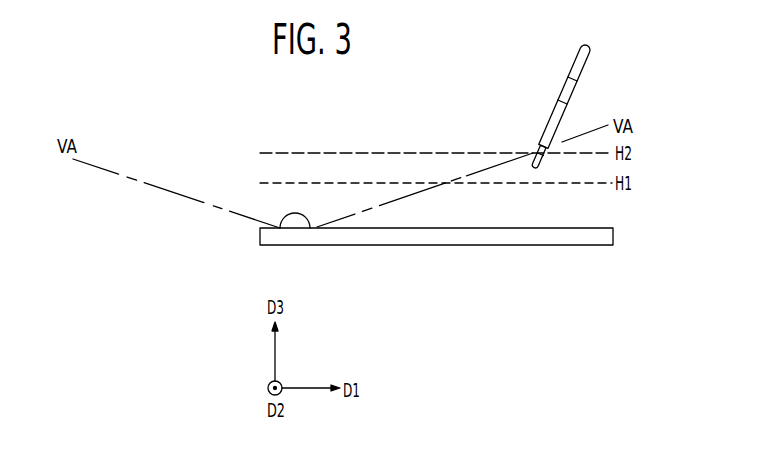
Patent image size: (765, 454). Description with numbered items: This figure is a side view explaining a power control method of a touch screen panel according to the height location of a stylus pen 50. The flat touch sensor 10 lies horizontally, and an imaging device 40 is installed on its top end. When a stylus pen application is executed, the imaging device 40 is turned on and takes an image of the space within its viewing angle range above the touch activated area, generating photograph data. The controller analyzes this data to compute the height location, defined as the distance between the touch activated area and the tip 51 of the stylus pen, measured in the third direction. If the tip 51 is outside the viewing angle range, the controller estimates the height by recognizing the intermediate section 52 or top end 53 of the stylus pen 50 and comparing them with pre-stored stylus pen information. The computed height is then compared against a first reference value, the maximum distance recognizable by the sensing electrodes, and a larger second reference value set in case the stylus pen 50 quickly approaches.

The touch sensor 10 is at (613, 236).
The imaging device 40 is at (281, 222).
The stylus pen 50 is at (533, 106).
The tip of the stylus pen 51 is at (519, 143).
The intermediate section of the stylus pen 52 is at (559, 100).
The top end of the stylus pen 53 is at (574, 65).